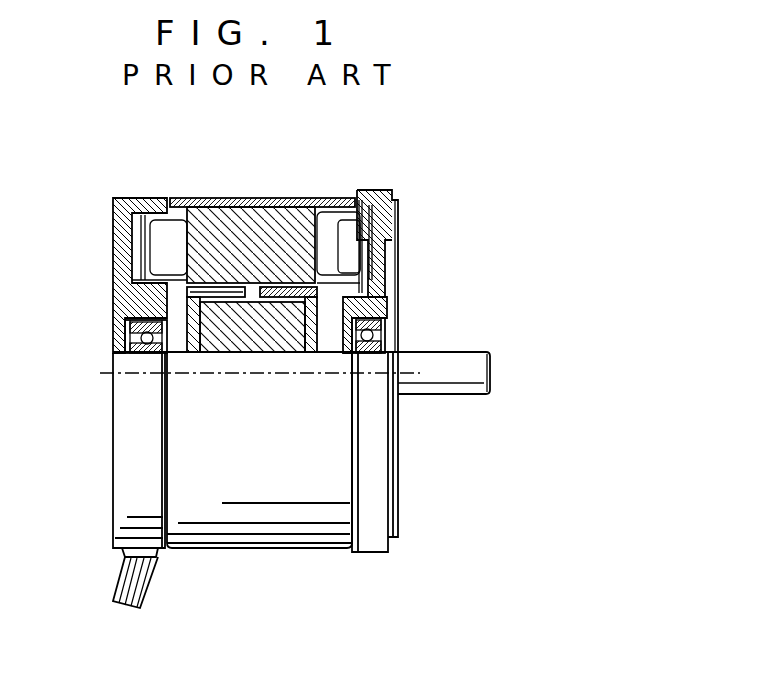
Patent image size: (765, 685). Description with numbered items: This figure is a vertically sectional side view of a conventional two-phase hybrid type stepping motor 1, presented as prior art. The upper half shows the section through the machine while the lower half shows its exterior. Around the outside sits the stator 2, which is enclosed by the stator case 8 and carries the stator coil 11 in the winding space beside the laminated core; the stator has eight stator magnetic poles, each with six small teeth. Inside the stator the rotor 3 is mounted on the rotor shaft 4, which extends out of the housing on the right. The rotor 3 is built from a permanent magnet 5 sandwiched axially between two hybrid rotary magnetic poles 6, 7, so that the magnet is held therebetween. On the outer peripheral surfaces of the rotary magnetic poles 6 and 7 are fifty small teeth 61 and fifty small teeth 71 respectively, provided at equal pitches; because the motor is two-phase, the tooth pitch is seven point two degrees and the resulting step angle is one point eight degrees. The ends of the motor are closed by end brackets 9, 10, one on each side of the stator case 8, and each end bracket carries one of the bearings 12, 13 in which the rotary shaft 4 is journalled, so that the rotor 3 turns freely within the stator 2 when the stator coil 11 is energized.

The stepping motor 1 is at (136, 196).
The stator 2 is at (235, 215).
The rotor 3 is at (262, 348).
The rotor shaft 4 is at (414, 352).
The permanent magnet 5 is at (258, 354).
The hybrid rotary magnetic pole 6 is at (190, 354).
The hybrid rotary magnetic pole 7 is at (310, 354).
The stator case 8 is at (300, 203).
The end bracket 9 is at (128, 242).
The end bracket 10 is at (392, 245).
The stator coil 11 is at (332, 237).
The bearing 12 is at (127, 324).
The bearing 13 is at (390, 323).
The small teeth 61 is at (200, 289).
The small teeth 71 is at (320, 290).